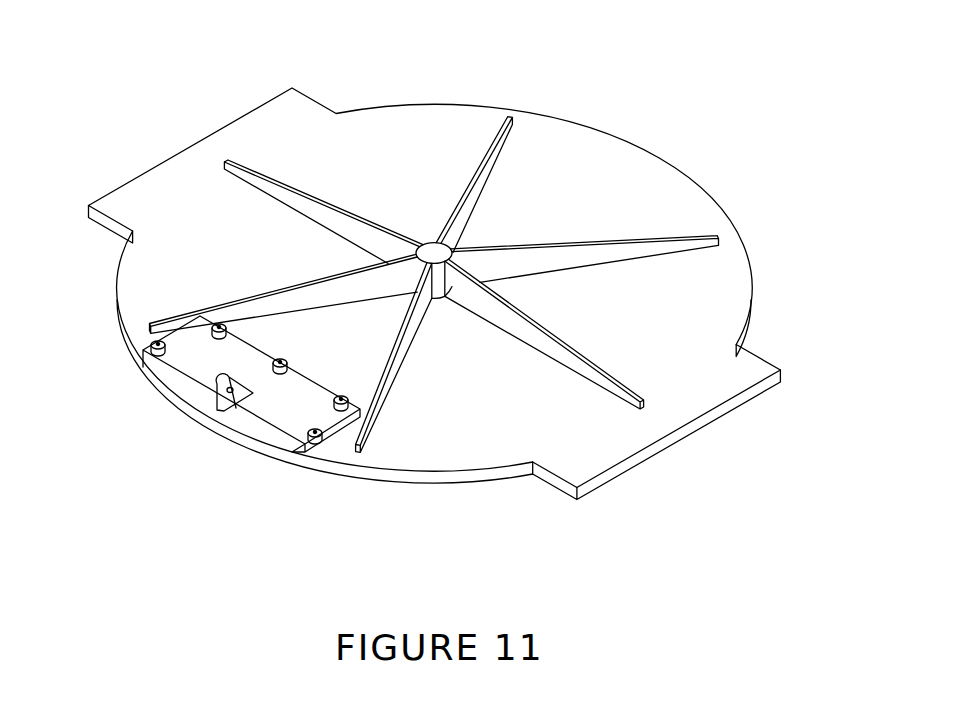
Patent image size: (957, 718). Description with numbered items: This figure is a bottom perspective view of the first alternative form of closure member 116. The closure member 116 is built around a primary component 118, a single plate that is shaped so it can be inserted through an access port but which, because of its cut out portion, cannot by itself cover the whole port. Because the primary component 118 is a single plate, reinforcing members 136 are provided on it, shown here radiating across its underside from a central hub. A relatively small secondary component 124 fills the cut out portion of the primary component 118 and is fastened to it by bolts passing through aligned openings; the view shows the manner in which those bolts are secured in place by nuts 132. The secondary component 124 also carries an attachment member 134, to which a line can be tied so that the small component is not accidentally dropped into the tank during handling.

The closure member 116 is at (161, 124).
The primary component 118 is at (178, 226).
The reinforcing members 136 is at (593, 246).
The secondary component 124 is at (193, 373).
The nuts 132 is at (341, 407).
The attachment member 134 is at (218, 408).